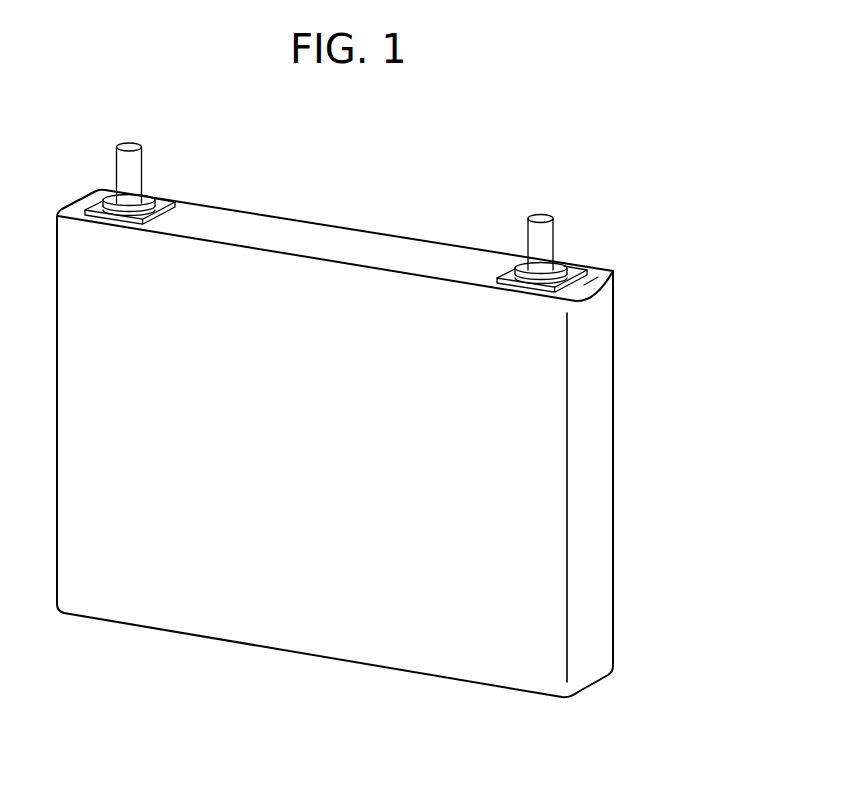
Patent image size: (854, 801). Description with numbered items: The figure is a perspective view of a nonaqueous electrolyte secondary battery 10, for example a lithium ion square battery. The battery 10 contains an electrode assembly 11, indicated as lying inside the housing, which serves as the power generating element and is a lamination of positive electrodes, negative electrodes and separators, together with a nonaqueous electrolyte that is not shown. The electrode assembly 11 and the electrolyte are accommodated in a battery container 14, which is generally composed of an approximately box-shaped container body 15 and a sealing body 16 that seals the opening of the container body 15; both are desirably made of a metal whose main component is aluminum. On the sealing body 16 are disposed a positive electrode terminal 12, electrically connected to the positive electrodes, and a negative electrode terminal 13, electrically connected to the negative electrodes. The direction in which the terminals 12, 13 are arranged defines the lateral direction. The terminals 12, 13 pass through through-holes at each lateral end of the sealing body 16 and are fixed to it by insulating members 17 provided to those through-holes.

The nonaqueous electrolyte secondary battery 10 is at (643, 122).
The electrode assembly 11 is at (508, 488).
The positive electrode terminal 12 is at (132, 149).
The negative electrode terminal 13 is at (541, 218).
The battery container 14 is at (700, 313).
The container body 15 is at (598, 412).
The sealing body 16 is at (613, 272).
The insulating member 17 is at (163, 197).